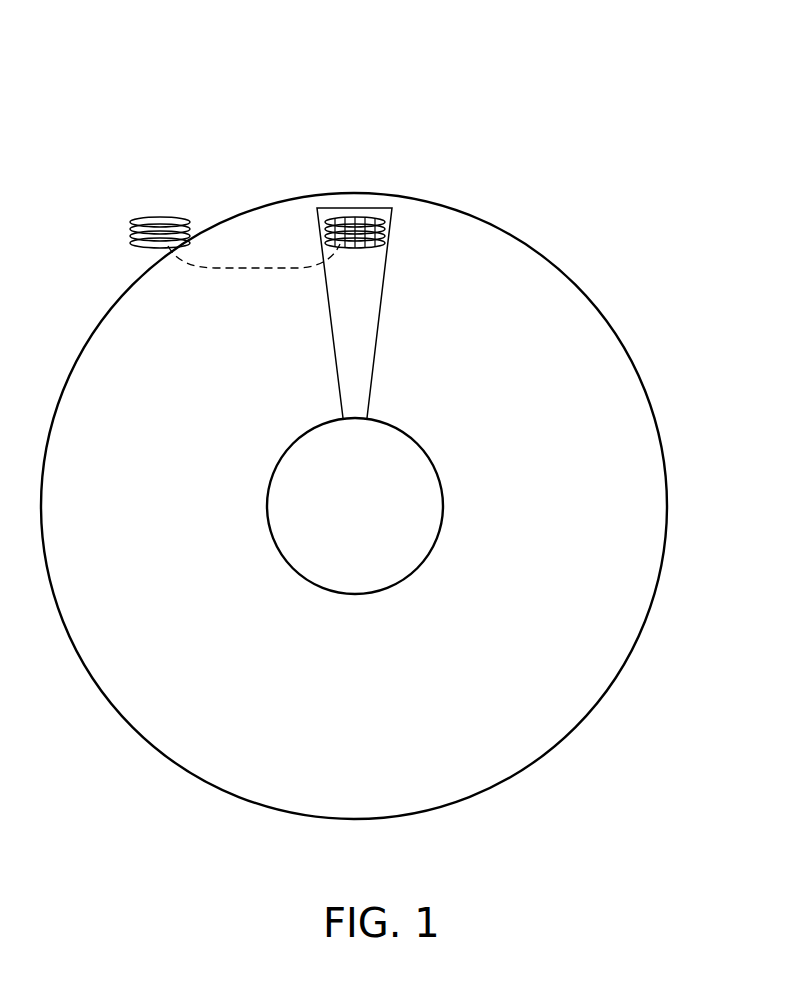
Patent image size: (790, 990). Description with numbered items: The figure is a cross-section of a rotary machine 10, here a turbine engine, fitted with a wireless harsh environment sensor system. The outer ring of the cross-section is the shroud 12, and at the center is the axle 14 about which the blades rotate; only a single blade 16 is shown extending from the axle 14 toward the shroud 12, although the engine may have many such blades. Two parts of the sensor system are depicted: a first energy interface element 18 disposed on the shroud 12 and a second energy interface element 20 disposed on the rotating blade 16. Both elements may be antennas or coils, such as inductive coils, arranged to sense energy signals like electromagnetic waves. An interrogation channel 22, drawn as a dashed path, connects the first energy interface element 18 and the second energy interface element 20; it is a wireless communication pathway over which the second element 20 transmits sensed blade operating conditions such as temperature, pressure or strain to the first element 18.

The rotary machine 10 is at (608, 92).
The shroud 12 is at (617, 330).
The axle 14 is at (442, 488).
The blade 16 is at (376, 337).
The first energy interface element 18 is at (170, 216).
The second energy interface element 20 is at (355, 216).
The interrogation channel 22 is at (262, 270).